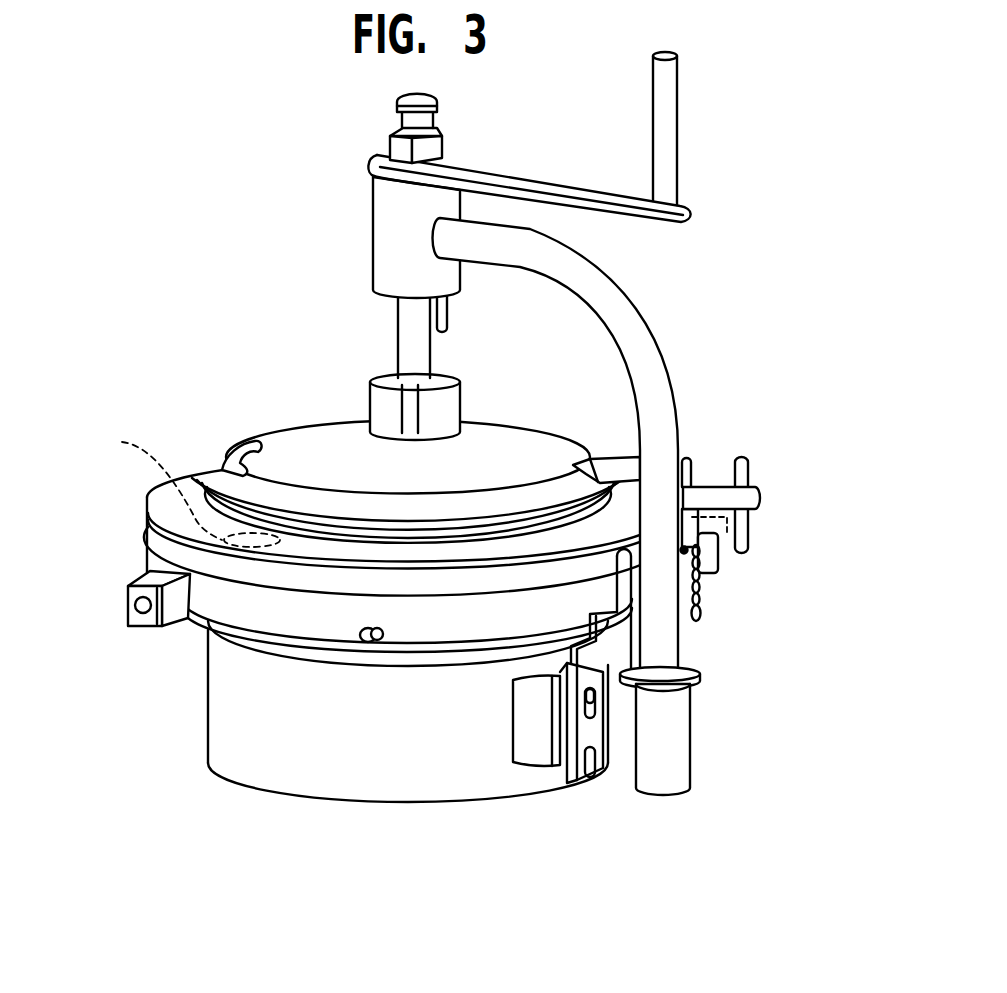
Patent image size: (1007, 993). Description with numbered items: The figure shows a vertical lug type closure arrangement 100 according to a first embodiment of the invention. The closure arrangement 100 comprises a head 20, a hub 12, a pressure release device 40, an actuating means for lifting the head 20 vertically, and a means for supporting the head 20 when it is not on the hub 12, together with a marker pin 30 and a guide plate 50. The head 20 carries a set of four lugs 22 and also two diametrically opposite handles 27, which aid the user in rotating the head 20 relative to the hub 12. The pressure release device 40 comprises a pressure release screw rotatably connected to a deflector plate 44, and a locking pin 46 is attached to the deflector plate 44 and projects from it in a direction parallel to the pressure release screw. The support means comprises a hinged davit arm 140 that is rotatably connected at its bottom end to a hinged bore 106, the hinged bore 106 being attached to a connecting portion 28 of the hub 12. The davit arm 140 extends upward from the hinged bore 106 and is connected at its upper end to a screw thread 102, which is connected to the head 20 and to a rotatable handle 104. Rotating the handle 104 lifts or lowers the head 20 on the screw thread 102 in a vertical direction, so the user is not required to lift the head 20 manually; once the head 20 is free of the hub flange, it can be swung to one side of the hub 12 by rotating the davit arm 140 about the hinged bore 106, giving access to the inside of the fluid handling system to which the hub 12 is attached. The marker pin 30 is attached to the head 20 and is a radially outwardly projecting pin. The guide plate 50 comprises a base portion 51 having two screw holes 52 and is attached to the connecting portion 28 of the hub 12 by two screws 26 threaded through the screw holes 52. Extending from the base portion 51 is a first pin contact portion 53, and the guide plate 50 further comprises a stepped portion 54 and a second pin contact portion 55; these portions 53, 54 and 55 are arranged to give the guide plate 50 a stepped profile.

The closure arrangement 100 is at (313, 193).
The rotatable handle 104 is at (521, 175).
The screw thread 102 is at (397, 331).
The hinged davit arm 140 is at (648, 332).
The head 20 is at (237, 468).
The handles 27 is at (180, 487).
The lugs 22 is at (116, 572).
The marker pin 30 is at (377, 621).
The stepped portion 54 is at (596, 636).
The deflector plate 44 is at (693, 470).
The pressure release device 40 is at (754, 478).
The locking pin 46 is at (750, 541).
The second pin contact portion 55 is at (633, 592).
The guide plate 50 is at (697, 686).
The hinged bore 106 is at (677, 741).
The screws 26 is at (608, 701).
The base portion 51 is at (601, 735).
The screw holes 52 is at (586, 722).
The connecting portion 28 is at (531, 727).
The first pin contact portion 53 is at (594, 646).
The hub 12 is at (278, 750).